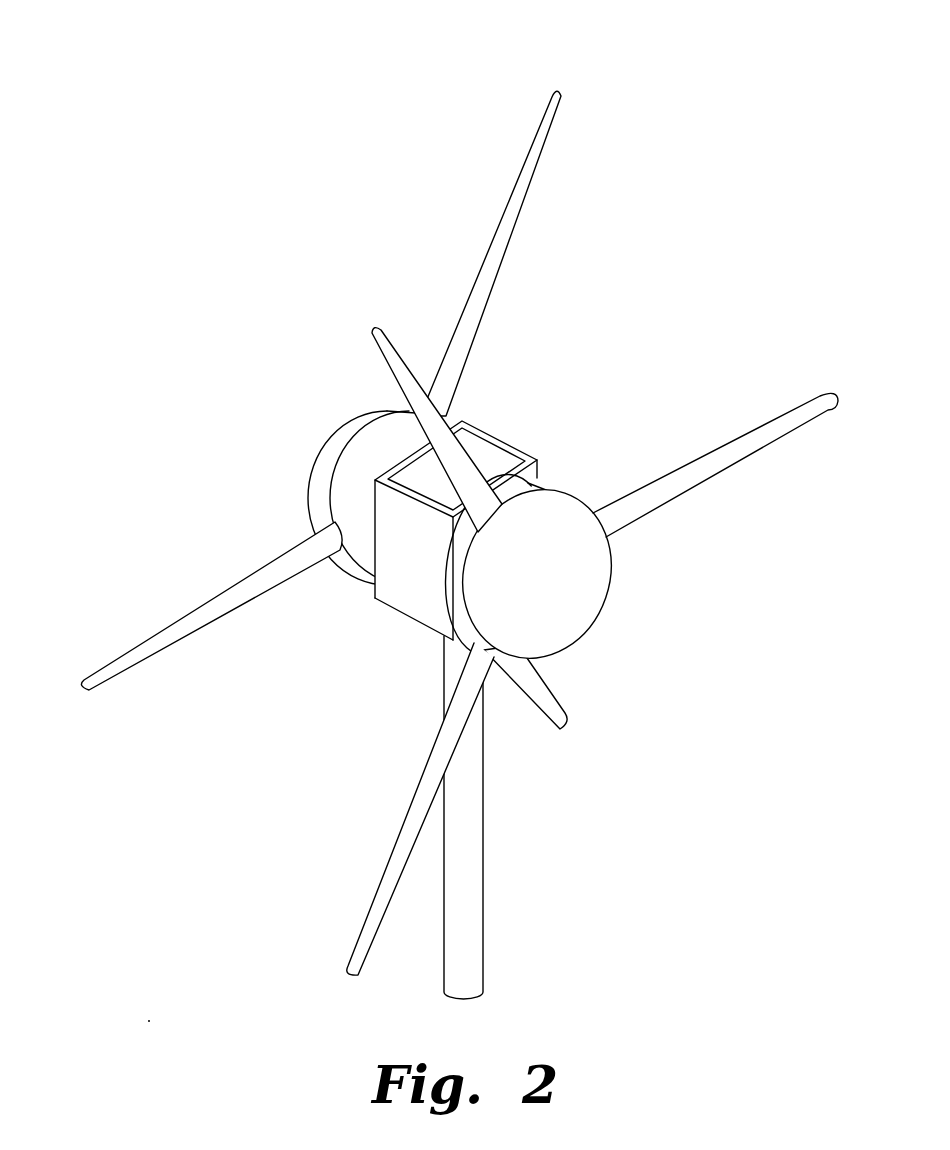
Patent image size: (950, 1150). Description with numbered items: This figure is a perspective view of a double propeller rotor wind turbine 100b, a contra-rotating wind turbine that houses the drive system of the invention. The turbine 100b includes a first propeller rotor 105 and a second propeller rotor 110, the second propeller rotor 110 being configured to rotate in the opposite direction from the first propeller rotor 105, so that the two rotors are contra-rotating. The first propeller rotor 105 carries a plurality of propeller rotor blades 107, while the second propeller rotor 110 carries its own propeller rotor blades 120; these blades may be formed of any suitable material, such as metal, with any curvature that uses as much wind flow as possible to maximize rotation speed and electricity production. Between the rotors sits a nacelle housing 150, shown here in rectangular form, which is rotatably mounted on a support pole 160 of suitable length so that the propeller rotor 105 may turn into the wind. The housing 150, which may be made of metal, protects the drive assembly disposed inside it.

The double propeller rotor wind turbine 100b is at (132, 68).
The first propeller rotor 105 is at (648, 610).
The propeller rotor blades 107 is at (374, 327).
The second propeller rotor 110 is at (312, 402).
The propeller rotor blades 120 is at (522, 170).
The nacelle housing 150 is at (500, 440).
The pole 160 is at (486, 882).